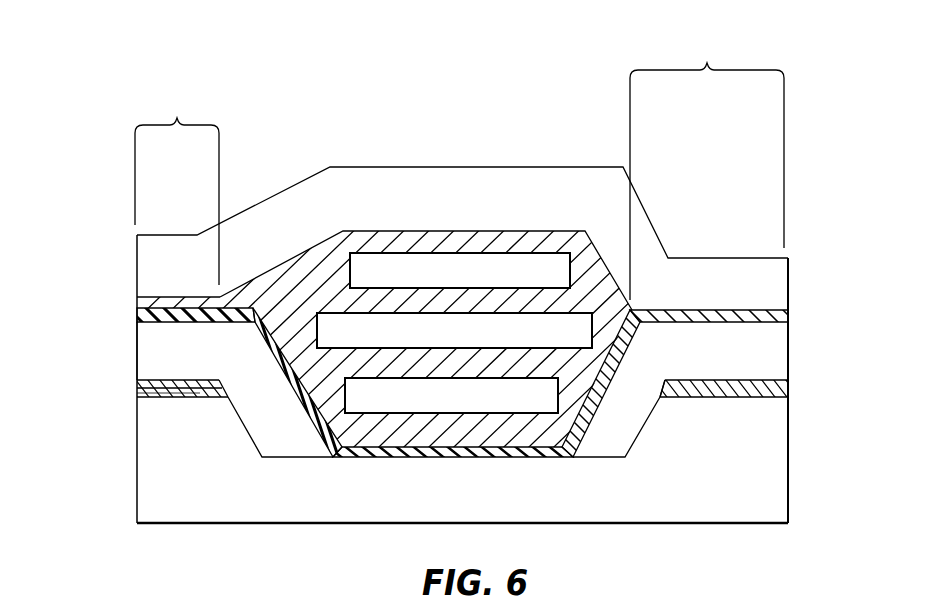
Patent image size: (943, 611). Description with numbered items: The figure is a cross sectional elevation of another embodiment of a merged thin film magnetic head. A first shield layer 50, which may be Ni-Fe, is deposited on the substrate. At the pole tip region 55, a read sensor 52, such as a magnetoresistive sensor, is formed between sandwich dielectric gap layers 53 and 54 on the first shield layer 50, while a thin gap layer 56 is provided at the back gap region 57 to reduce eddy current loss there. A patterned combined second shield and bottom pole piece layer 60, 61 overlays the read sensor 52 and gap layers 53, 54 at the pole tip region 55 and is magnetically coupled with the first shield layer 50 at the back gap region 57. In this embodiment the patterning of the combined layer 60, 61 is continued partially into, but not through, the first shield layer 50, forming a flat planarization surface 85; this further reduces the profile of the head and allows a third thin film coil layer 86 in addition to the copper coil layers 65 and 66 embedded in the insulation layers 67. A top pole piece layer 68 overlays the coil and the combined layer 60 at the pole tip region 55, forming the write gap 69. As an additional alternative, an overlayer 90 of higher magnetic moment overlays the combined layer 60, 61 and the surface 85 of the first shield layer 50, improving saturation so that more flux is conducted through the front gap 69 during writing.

The first shield layer 50 is at (788, 490).
The read sensor 52 is at (178, 388).
The dielectric gap layer 53 is at (138, 392).
The dielectric gap layer 54 is at (137, 385).
The pole tip region 55 is at (177, 185).
The thin gap layer 56 is at (788, 385).
The back gap region 57 is at (707, 165).
The combined second shield and bottom pole piece layer 60 is at (138, 345).
The combined second shield and bottom pole piece layer 61 is at (788, 343).
The thin film coil layer 65 is at (507, 409).
The thin film coil layer 66 is at (506, 340).
The insulation layers 67 is at (376, 231).
The top pole piece layer 68 is at (380, 167).
The write gap 69 is at (138, 305).
The flat planarization surface 85 is at (397, 457).
The third thin film coil layer 86 is at (506, 281).
The overlayer 90 is at (407, 445).